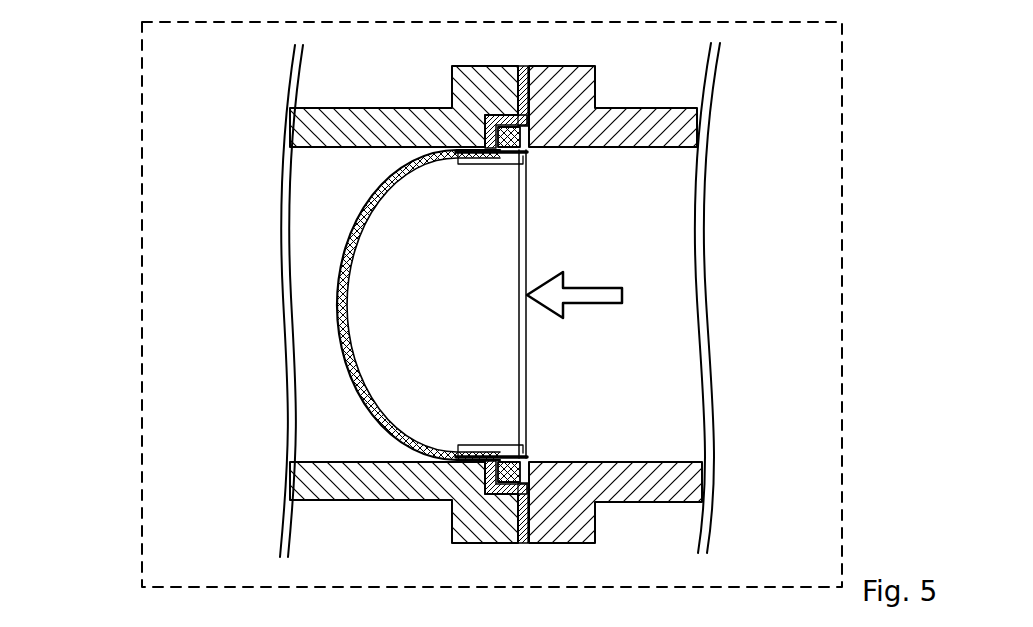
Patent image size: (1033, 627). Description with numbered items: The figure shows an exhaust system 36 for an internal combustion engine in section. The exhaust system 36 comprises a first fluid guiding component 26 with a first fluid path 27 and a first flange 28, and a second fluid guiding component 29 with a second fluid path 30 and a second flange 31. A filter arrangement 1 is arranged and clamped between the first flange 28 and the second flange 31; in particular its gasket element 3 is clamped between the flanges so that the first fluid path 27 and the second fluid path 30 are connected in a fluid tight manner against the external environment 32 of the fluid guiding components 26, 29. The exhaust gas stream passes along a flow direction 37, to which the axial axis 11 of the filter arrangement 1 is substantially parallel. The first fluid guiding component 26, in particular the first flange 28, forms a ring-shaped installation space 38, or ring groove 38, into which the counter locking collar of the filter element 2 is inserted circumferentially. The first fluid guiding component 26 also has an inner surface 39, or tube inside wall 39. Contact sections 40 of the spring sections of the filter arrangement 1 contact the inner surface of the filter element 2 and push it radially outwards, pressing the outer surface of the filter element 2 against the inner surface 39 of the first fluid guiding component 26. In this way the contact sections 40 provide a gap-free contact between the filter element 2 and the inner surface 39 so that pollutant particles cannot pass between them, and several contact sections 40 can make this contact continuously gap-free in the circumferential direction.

The filter arrangement 1 is at (532, 347).
The filter element 2 is at (264, 305).
The gasket element 3 is at (530, 492).
The axial axis 11 is at (725, 255).
The first fluid guiding component 26 is at (345, 130).
The first fluid path 27 is at (330, 245).
The first flange 28 is at (490, 513).
The second fluid guiding component 29 is at (610, 135).
The second fluid path 30 is at (600, 230).
The second flange 31 is at (545, 490).
The external environment 32 is at (518, 560).
The exhaust system 36 is at (140, 68).
The flow direction 37 is at (598, 297).
The ring-shaped installation space 38 is at (480, 130).
The inner surface 39 is at (390, 461).
The contact section 40 is at (470, 445).